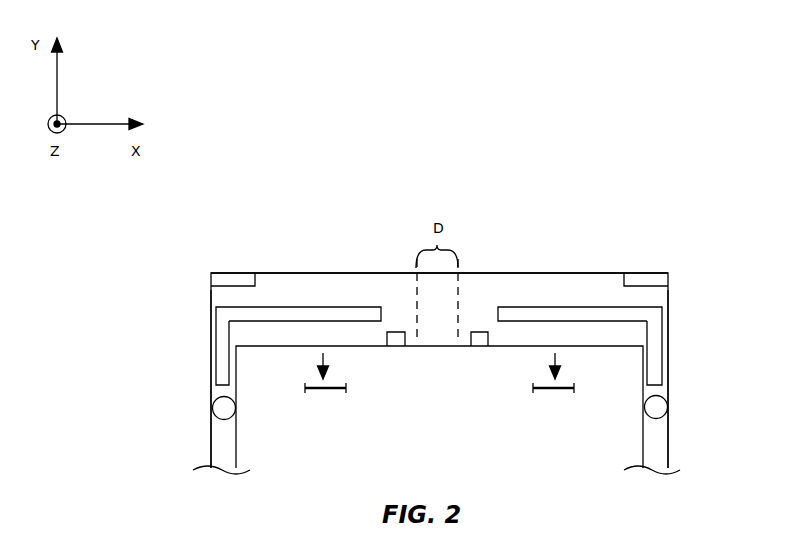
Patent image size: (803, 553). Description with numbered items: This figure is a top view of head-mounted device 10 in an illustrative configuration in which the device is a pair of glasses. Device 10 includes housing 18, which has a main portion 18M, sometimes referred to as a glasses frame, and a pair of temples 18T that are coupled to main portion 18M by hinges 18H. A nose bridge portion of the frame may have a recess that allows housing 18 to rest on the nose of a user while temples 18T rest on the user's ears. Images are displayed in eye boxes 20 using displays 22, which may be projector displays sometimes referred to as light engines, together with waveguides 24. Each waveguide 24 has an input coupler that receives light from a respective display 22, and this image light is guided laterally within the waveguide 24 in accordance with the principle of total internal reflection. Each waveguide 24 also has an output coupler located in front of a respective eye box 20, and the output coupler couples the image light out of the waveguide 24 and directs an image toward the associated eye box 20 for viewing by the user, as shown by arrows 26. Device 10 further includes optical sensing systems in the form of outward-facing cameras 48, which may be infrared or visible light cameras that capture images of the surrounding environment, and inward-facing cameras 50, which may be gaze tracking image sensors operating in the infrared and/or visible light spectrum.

The head-mounted device 10 is at (637, 165).
The housing 18 is at (150, 371).
The main portion 18M is at (211, 292).
The temples 18T is at (219, 440).
The hinges 18H is at (225, 408).
The outward-facing cameras 48 is at (233, 281).
The waveguides 24 is at (322, 315).
The displays 22 is at (227, 362).
The inward-facing cameras 50 is at (480, 341).
The arrows 26 is at (327, 360).
The eye boxes 20 is at (350, 389).